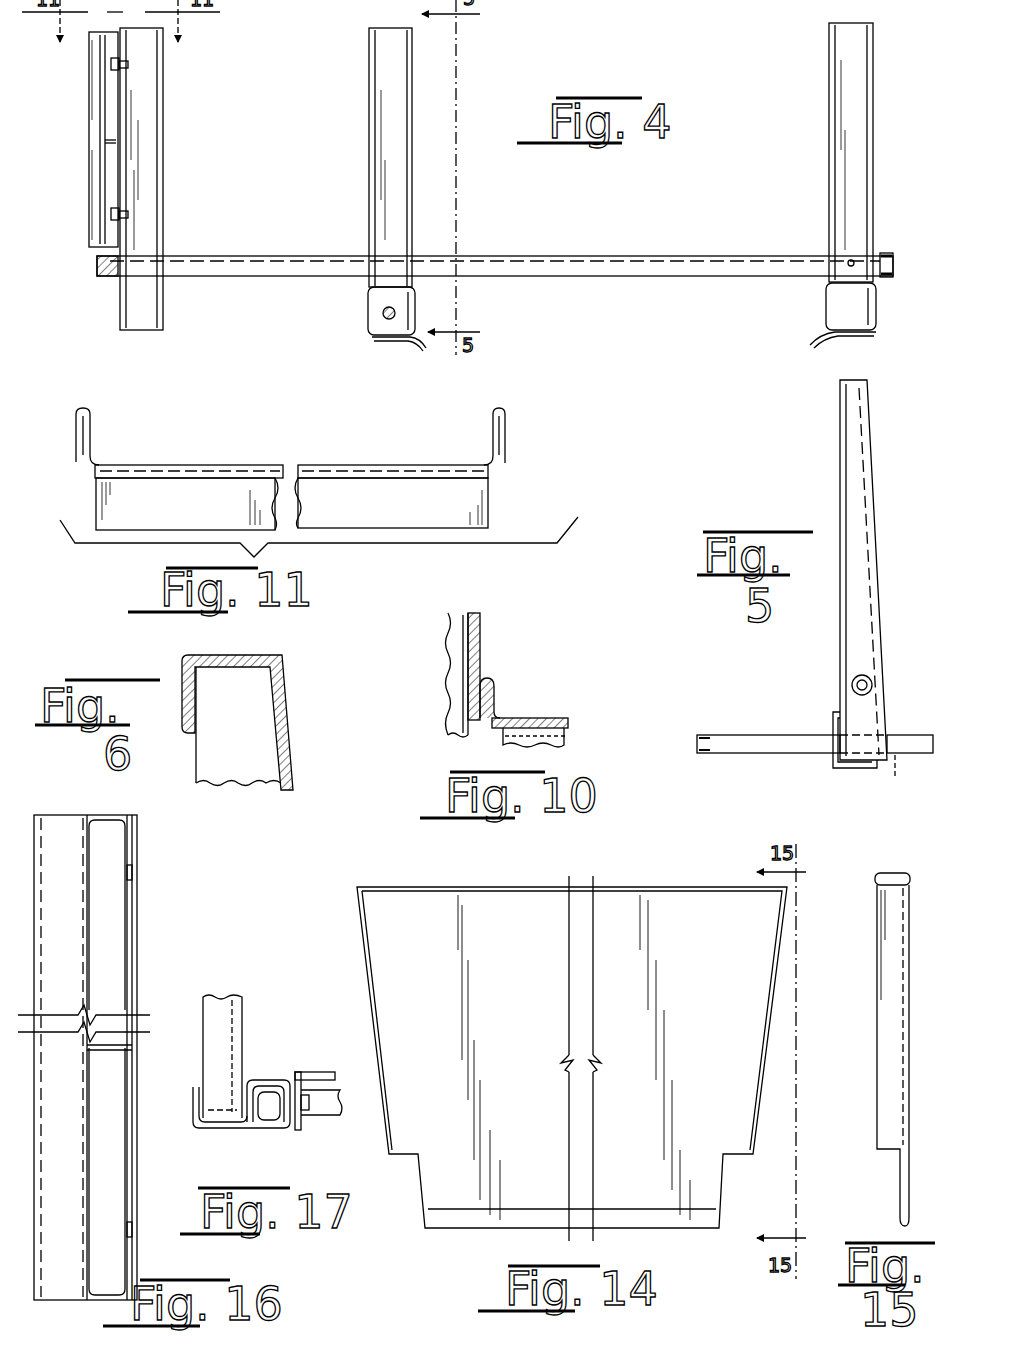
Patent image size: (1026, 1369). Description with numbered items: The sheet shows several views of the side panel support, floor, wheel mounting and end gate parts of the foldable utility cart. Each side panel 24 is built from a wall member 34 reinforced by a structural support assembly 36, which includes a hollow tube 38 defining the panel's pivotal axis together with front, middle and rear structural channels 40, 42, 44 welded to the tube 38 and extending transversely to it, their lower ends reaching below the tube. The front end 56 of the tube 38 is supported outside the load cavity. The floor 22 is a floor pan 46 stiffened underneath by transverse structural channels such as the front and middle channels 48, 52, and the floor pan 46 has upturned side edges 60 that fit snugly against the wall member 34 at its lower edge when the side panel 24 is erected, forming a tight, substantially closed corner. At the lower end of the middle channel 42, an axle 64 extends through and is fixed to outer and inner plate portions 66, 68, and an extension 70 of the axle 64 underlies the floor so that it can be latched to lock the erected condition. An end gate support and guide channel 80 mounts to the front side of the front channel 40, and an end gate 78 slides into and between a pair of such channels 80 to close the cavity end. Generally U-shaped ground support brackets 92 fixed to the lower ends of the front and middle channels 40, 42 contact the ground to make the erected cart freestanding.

In FIG. 11, the floor 22 is at (509, 441).
In FIG. 10, the floor 22 is at (537, 713).
In FIG. 6, the side panel 24 is at (290, 686).
In FIG. 10, the side panel 24 is at (487, 636).
In FIG. 6, the wall member 34 is at (288, 752).
In FIG. 4, the structural support assembly 36 is at (663, 283).
In FIG. 5, the tube 38 is at (868, 678).
In FIG. 17, the tube 38 is at (322, 1118).
In FIG. 4, the front structural channel 40 is at (148, 127).
In FIG. 10, the front structural channel 40 is at (452, 702).
In FIG. 17, the front structural channel 40 is at (315, 1071).
In FIG. 4, the middle structural channel 42 is at (383, 122).
In FIG. 5, the middle structural channel 42 is at (878, 542).
In FIG. 6, the middle structural channel 42 is at (232, 778).
In FIG. 4, the rear structural channel 44 is at (829, 162).
In FIG. 11, the floor pan 46 is at (377, 467).
In FIG. 10, the floor pan 46 is at (557, 718).
In FIG. 10, the front transverse structural channel 48 is at (568, 741).
In FIG. 11, the middle transverse structural channel 52 is at (488, 496).
In FIG. 4, the front end of tube 56 is at (108, 280).
In FIG. 11, the upturned side edge 60 is at (92, 458).
In FIG. 10, the upturned side edge 60 is at (494, 698).
In FIG. 4, the axle 64 is at (383, 313).
In FIG. 5, the axle 64 is at (750, 735).
In FIG. 4, the outer plate portion 66 is at (372, 330).
In FIG. 5, the outer plate portion 66 is at (833, 725).
In FIG. 5, the inner plate portion 68 is at (898, 772).
In FIG. 5, the extension 70 is at (933, 740).
In FIG. 17, the end gate 78 is at (243, 1016).
In FIG. 14, the end gate 78 is at (519, 885).
In FIG. 15, the end gate 78 is at (912, 1001).
In FIG. 4, the end gate support and guide channel 80 is at (86, 154).
In FIG. 16, the end gate support and guide channel 80 is at (141, 964).
In FIG. 17, the end gate support and guide channel 80 is at (206, 1132).
In FIG. 4, the ground support bracket 92 is at (398, 340).